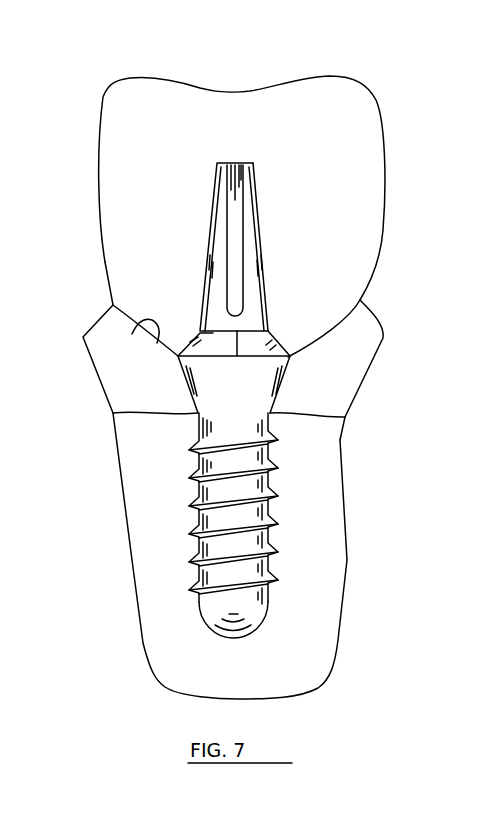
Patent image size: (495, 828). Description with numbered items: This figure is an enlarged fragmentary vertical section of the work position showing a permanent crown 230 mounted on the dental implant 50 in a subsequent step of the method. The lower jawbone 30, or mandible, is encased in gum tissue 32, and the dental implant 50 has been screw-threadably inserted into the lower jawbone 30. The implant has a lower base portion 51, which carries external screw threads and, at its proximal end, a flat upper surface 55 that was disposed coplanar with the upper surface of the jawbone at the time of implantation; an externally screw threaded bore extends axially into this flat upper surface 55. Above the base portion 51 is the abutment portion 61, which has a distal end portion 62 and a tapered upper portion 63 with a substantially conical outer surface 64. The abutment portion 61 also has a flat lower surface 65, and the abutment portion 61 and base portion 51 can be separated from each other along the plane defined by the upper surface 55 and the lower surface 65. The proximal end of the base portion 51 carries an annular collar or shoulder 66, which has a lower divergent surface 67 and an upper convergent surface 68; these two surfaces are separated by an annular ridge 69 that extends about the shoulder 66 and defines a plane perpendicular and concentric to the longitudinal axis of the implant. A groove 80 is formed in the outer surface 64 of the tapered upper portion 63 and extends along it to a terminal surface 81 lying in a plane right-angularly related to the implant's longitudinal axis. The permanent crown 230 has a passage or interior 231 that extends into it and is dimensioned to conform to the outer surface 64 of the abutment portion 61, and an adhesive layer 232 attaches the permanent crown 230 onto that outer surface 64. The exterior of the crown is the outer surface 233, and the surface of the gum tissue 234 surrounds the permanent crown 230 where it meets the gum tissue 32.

The lower jawbone 30 is at (300, 456).
The gum tissue 32 is at (357, 358).
The dental implant 50 is at (253, 515).
The base portion 51 is at (196, 486).
The flat upper surface 55 is at (253, 330).
The abutment portion 61 is at (220, 187).
The distal end portion 62 is at (197, 331).
The tapered upper portion 63 is at (218, 222).
The conical outer surface 64 is at (220, 278).
The flat lower surface 65 is at (237, 356).
The annular shoulder 66 is at (200, 363).
The lower divergent surface 67 is at (212, 378).
The upper convergent surface 68 is at (273, 332).
The annular ridge 69 is at (284, 360).
The groove 80 is at (245, 190).
The terminal surface 81 is at (245, 161).
The permanent crown 230 is at (363, 142).
The passage 231 is at (255, 248).
The adhesive layer 232 is at (258, 213).
The outer surface of the permanent crown 233 is at (105, 281).
The surface of the gum tissue 234 is at (127, 337).